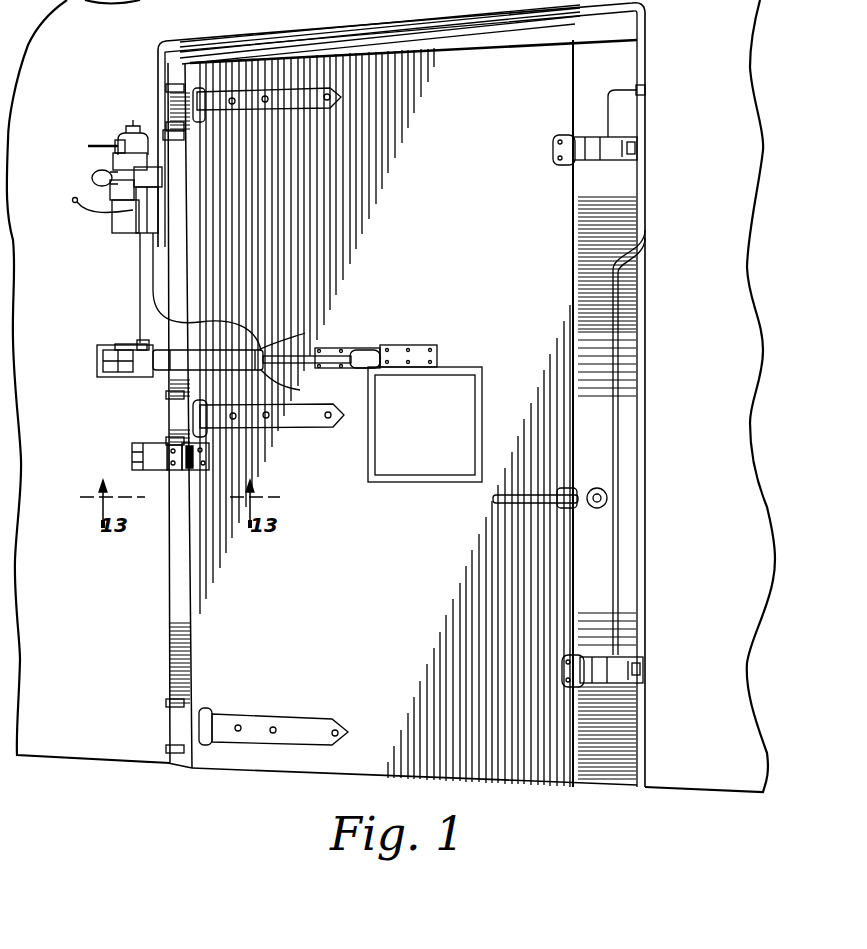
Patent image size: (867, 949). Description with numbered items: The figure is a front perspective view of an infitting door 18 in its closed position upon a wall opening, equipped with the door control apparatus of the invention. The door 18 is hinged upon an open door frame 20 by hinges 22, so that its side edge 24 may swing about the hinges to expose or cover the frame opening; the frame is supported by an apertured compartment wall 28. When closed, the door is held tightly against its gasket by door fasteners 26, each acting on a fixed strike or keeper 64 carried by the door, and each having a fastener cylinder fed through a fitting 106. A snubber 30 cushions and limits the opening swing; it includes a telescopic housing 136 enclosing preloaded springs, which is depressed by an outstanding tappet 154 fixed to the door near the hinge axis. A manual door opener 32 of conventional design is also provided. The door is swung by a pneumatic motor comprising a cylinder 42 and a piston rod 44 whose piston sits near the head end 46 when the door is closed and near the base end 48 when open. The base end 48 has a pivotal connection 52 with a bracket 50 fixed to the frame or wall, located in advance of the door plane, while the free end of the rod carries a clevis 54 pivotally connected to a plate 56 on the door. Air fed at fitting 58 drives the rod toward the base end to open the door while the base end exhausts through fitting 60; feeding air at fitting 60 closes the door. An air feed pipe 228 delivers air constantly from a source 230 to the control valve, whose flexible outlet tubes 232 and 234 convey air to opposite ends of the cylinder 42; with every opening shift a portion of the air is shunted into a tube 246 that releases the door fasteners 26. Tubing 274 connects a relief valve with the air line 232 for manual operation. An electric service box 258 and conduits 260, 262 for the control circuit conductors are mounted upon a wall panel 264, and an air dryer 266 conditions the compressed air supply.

The infitting door 18 is at (560, 445).
The door frame 20 is at (170, 584).
The hinges 22 is at (173, 96).
The side edge 24 is at (572, 462).
The door fasteners 26 is at (651, 147).
The compartment wall 28 is at (742, 428).
The snubber 30 is at (176, 471).
The manual door opener 32 is at (500, 498).
The cylinder 42 is at (186, 356).
The piston rod 44 is at (295, 355).
The head end 46 is at (292, 386).
The base end 48 is at (150, 373).
The bracket 50 is at (110, 377).
The pivotal connection 52 is at (125, 347).
The clevis 54 is at (363, 368).
The plate 56 is at (437, 356).
The fitting 58 is at (285, 346).
The fitting 60 is at (140, 343).
The strike 64 is at (560, 153).
The fitting 106 is at (606, 135).
The housing 136 is at (133, 455).
The tappet 154 is at (196, 472).
The air feed pipe 228 is at (165, 133).
The source 230 is at (100, 146).
The tube 232 is at (140, 296).
The tube 234 is at (150, 284).
The tube 246 is at (150, 252).
The electric service box 258 is at (115, 162).
The conduit 260 is at (94, 179).
The conduit 262 is at (112, 188).
The wall panel 264 is at (113, 227).
The air dryer 266 is at (131, 134).
The tubing 274 is at (99, 212).